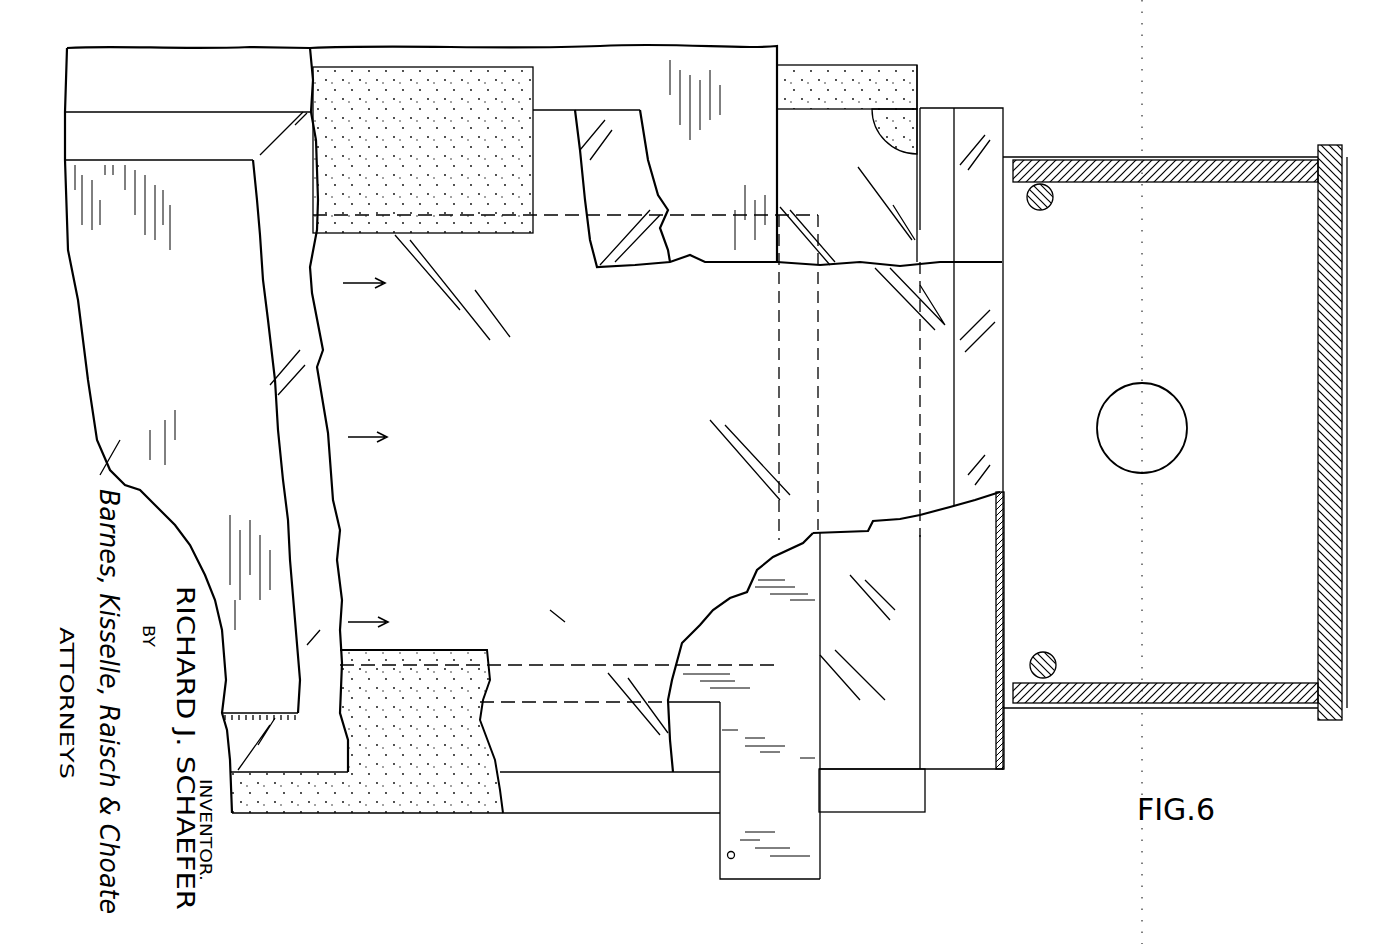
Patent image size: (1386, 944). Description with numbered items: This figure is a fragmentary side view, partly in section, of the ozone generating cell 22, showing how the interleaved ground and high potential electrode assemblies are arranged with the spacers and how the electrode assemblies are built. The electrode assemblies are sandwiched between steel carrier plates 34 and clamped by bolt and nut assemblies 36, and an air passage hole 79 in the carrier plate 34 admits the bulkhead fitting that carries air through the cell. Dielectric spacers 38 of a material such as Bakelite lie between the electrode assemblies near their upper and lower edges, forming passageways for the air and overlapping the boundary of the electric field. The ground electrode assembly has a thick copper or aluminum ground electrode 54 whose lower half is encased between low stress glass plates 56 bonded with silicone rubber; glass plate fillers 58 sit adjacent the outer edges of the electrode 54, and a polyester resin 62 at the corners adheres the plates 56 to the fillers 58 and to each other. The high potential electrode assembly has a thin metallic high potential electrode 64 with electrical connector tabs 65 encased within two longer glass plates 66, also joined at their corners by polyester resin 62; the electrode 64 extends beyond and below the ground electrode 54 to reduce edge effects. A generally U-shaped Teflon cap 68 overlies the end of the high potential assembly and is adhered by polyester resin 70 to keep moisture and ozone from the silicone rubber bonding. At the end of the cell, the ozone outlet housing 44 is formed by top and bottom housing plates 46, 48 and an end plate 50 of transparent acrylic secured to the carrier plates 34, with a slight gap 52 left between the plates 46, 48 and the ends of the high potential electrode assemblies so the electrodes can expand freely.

The ozone generating cell 22 is at (946, 851).
The steel carrier plate 34 is at (178, 317).
The bolt and nut assembly 36 is at (1055, 655).
The spacer 38 is at (400, 147).
The ozone outlet housing 44 is at (1200, 660).
The top housing plate 46 is at (1110, 703).
The bottom housing plate 48 is at (1130, 160).
The end plate 50 is at (1327, 520).
The gap 52 is at (1006, 183).
The ground electrode 54 is at (738, 169).
The glass plate 56 is at (296, 184).
The glass plate filler 58 is at (843, 113).
The polyester resin 62 is at (903, 112).
The high potential electrode 64 is at (746, 639).
The electrical connector tab 65 is at (810, 856).
The glass plate 66 is at (540, 395).
The cap 68 is at (986, 215).
The polyester resin 70 is at (1005, 773).
The air passage hole 79 is at (1142, 428).